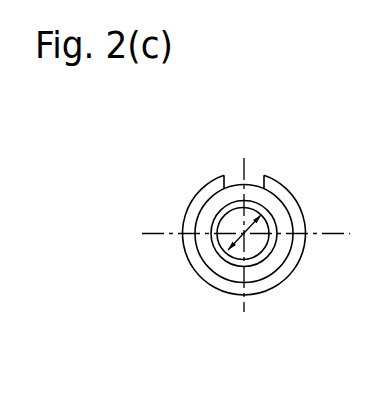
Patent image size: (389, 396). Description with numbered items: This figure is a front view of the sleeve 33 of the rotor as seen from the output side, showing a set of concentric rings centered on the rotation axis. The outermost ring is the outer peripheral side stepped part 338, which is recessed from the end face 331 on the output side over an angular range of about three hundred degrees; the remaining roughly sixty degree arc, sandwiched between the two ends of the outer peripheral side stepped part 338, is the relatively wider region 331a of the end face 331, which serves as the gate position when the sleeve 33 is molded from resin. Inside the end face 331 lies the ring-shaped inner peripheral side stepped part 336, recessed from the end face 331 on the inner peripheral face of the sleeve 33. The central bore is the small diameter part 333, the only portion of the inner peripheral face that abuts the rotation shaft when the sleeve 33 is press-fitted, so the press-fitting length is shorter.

The sleeve 33 is at (281, 181).
The end face 331 is at (197, 247).
The region 331a is at (235, 182).
The small diameter part 333 is at (247, 211).
The inner peripheral side stepped part 336 is at (222, 256).
The outer peripheral side stepped part 338 is at (293, 268).